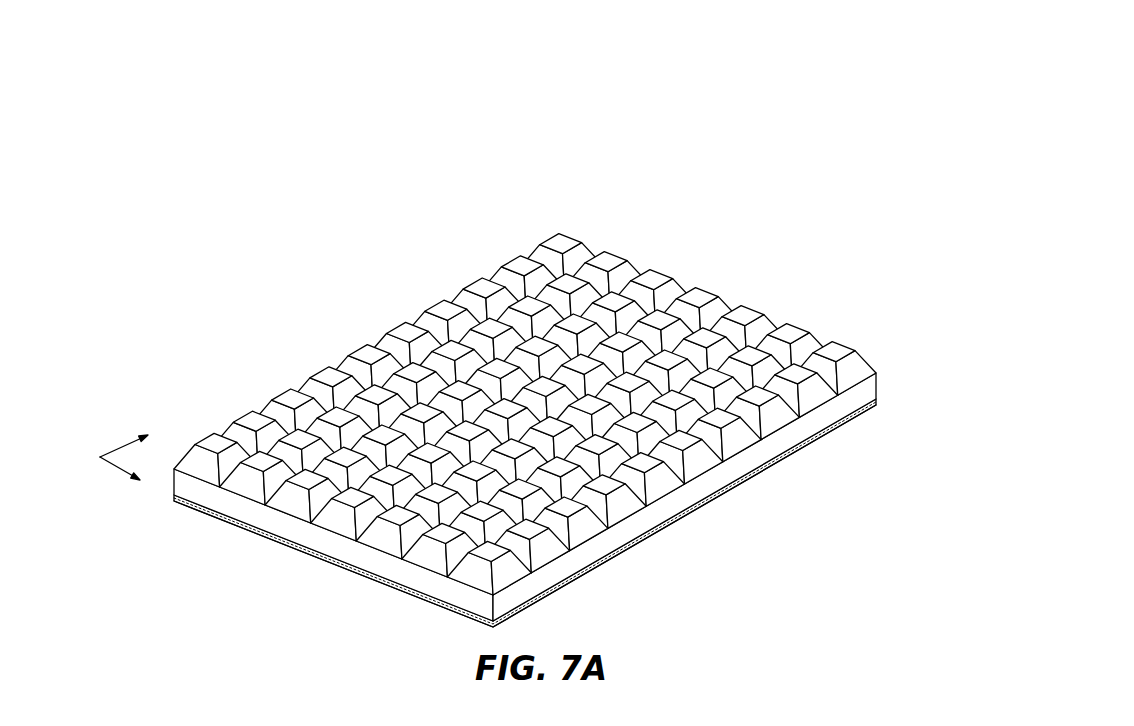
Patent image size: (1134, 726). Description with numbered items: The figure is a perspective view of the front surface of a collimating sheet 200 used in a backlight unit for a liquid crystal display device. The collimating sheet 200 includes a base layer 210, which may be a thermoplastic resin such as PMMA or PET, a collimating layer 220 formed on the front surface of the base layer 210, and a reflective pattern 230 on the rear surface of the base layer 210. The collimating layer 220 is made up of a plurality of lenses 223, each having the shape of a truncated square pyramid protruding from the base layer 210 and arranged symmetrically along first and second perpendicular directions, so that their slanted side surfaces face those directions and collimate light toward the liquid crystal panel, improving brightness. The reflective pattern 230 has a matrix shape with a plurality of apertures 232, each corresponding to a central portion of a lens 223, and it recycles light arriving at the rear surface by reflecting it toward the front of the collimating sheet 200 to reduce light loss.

The collimating sheet 200 is at (773, 209).
The base layer 210 is at (873, 388).
The collimating layer 220 is at (866, 345).
The lens 223 is at (789, 328).
The reflective pattern 230 is at (881, 403).
The aperture 232 is at (867, 412).